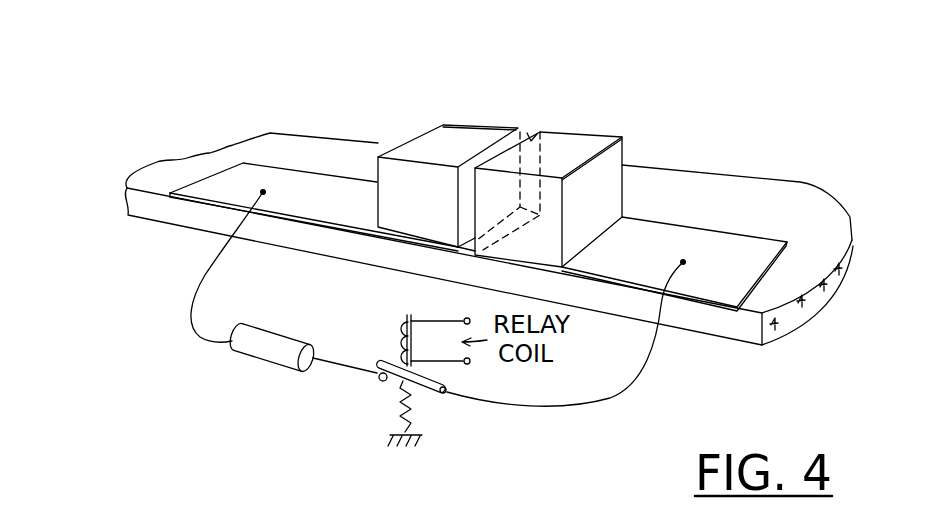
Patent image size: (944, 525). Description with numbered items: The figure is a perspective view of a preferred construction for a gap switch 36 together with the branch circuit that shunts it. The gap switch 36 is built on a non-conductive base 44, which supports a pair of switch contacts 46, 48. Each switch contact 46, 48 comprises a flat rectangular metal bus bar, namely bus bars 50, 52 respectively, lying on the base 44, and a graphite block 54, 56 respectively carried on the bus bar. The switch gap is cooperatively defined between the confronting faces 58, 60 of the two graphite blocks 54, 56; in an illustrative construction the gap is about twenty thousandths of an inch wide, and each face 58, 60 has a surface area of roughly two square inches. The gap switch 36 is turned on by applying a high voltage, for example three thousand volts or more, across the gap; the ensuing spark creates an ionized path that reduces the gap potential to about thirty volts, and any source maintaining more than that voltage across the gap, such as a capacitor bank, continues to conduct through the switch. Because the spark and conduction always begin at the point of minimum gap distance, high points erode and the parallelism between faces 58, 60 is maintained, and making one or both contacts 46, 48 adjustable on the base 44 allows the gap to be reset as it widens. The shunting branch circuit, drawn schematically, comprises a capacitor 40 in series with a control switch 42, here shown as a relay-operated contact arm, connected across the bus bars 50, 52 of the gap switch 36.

The gap switch 36 is at (489, 201).
The capacitor 40 is at (278, 370).
The control switch 42 is at (417, 372).
The non-conductive base 44 is at (768, 328).
The switch contact 46 is at (445, 124).
The switch contact 48 is at (624, 135).
The bus bar 50 is at (280, 183).
The bus bar 52 is at (668, 242).
The graphite block 54 is at (462, 140).
The graphite block 56 is at (600, 168).
The confronting face 58 is at (465, 212).
The confronting face 60 is at (527, 123).